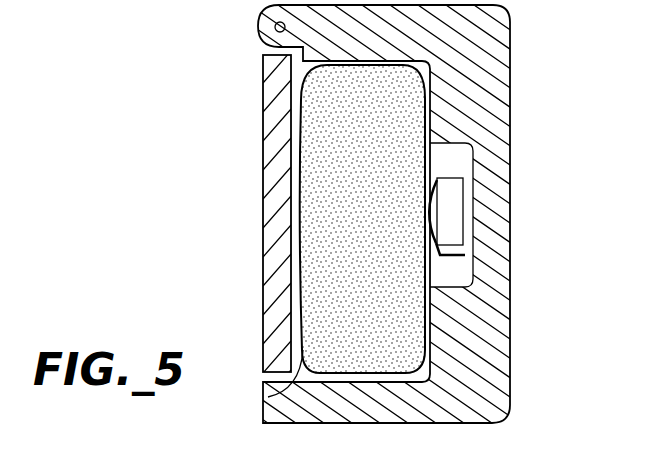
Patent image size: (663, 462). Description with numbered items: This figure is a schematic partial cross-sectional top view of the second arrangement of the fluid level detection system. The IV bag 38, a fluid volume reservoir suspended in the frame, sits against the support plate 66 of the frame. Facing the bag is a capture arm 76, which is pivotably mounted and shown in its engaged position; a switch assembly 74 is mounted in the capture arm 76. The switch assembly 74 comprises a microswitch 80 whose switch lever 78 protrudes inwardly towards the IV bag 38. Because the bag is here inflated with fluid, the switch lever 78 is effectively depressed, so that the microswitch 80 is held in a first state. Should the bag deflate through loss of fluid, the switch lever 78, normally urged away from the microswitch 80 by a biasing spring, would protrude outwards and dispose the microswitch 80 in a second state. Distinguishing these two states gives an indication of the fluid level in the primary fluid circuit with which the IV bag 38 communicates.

The capture arm 76 is at (491, 86).
The switch assembly 74 is at (455, 173).
The switch lever 78 is at (440, 223).
The microswitch 80 is at (466, 234).
The support plate 66 is at (263, 262).
The IV bag 38 is at (275, 397).